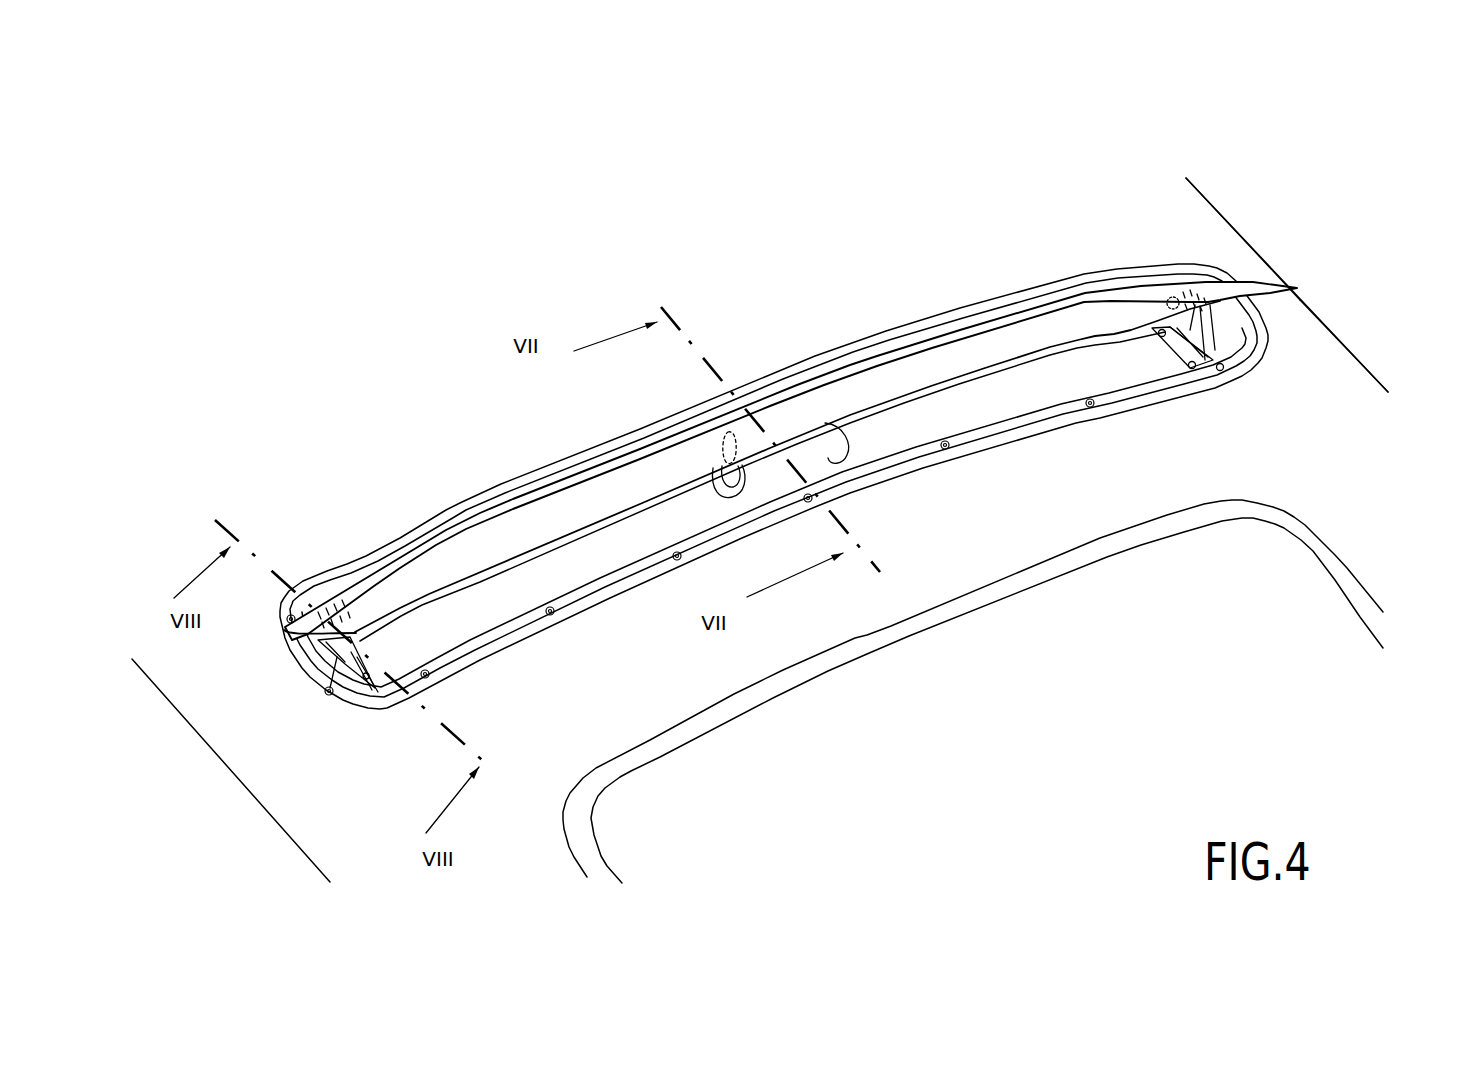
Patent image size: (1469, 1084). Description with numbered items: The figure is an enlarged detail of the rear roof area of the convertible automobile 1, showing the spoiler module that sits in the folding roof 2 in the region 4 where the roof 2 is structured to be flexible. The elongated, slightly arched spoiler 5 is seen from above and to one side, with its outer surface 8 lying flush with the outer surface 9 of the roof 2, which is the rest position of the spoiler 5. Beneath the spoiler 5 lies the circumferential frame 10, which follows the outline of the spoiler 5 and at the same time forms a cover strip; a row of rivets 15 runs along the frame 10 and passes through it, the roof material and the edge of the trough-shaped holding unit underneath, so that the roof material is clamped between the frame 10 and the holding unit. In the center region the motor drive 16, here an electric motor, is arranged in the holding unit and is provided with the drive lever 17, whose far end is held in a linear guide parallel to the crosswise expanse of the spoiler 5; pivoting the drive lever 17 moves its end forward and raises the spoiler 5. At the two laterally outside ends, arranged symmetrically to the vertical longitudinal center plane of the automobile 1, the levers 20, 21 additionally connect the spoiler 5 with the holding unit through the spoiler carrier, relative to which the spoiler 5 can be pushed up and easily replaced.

The convertible automobile 1 is at (1323, 258).
The folding roof 2 is at (729, 234).
The flexible region of the roof 4 is at (1148, 223).
The spoiler 5 is at (1220, 298).
The outer surface of the spoiler 8 is at (973, 352).
The outer surface of the roof 9 is at (1376, 363).
The circumferential frame 10 is at (1234, 340).
The rivets 15 is at (1091, 403).
The motor drive 16 is at (806, 447).
The drive lever 17 is at (729, 446).
The side lever 20 is at (286, 630).
The side lever 21 is at (357, 657).